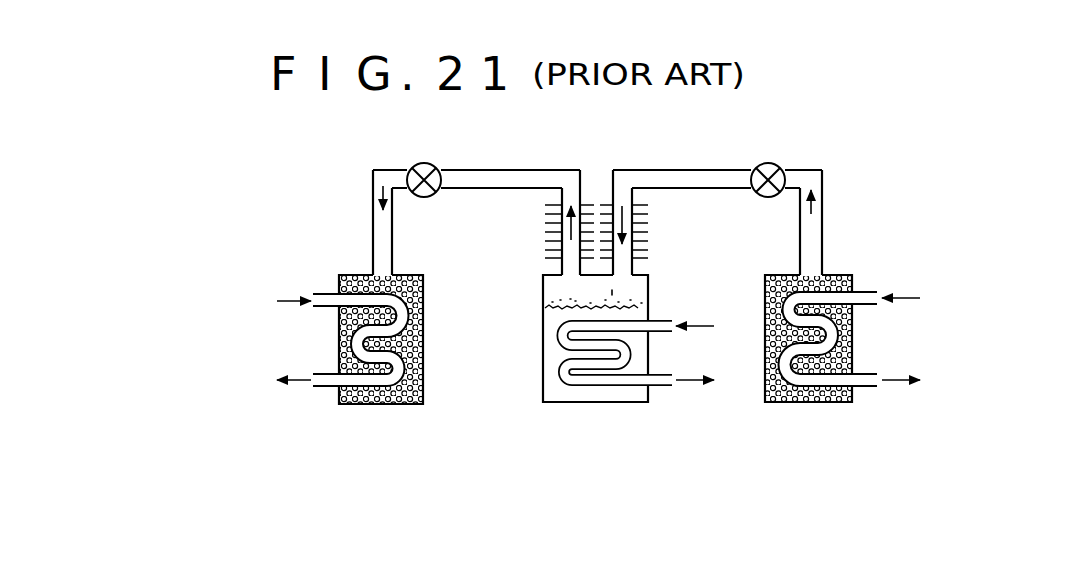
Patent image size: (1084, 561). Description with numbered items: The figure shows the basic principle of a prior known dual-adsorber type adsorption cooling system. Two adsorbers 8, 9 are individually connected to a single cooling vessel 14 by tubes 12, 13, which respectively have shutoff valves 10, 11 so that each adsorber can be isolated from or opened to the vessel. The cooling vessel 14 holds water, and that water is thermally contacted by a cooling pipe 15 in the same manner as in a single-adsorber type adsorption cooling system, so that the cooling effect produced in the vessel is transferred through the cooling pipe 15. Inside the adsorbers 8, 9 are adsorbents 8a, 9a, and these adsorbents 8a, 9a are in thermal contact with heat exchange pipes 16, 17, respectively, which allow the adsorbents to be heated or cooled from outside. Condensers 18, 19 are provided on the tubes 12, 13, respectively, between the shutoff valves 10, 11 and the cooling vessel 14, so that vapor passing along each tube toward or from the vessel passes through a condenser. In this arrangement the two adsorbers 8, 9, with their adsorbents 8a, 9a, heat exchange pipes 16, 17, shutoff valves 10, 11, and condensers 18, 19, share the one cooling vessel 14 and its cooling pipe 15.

The adsorber 8 is at (380, 405).
The adsorbent 8a is at (350, 274).
The adsorber 9 is at (805, 403).
The adsorbent 9a is at (836, 273).
The shutoff valve 10 is at (430, 165).
The shutoff valve 11 is at (780, 166).
The tube 12 is at (510, 172).
The tube 13 is at (665, 172).
The cooling vessel 14 is at (598, 402).
The cooling pipe 15 is at (655, 383).
The heat exchange pipe 16 is at (332, 301).
The heat exchange pipe 17 is at (860, 303).
The condenser 18 is at (568, 252).
The condenser 19 is at (626, 250).